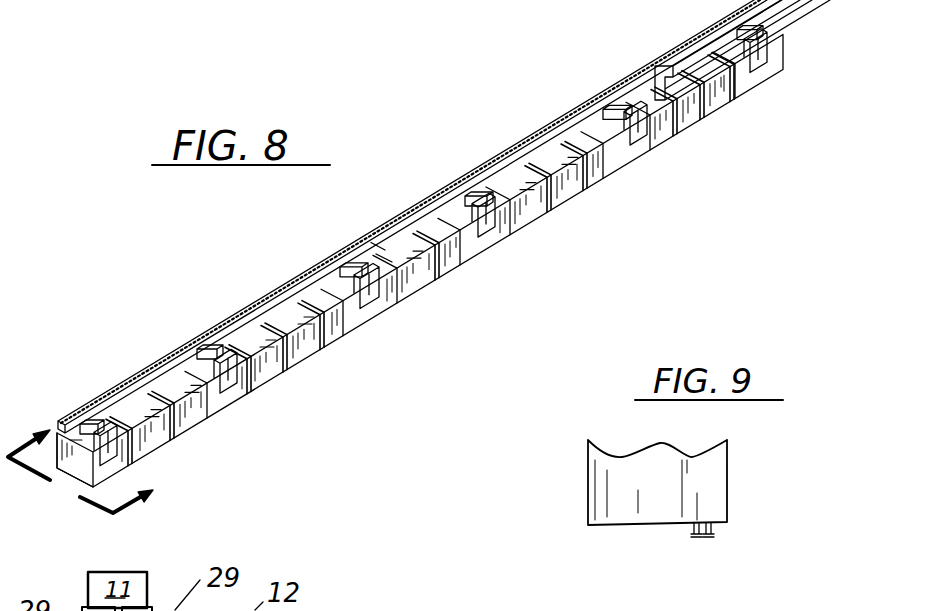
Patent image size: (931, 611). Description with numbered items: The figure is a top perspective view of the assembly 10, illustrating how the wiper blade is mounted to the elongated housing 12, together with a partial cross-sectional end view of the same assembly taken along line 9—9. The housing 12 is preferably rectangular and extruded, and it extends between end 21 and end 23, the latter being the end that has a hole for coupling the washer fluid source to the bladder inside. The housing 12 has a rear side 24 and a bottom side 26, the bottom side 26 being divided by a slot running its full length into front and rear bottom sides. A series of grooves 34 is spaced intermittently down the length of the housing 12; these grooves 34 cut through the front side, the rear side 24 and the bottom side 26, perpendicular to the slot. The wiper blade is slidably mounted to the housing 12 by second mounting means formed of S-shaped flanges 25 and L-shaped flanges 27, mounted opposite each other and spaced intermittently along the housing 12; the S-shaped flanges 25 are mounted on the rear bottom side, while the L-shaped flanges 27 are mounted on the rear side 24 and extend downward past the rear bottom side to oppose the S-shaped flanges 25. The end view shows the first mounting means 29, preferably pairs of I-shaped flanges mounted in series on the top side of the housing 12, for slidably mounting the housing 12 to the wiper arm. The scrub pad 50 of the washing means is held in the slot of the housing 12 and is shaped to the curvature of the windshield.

In FIG. 8, the line 9— 9 is at (90, 459).
In FIG. 8, the assembly 10 is at (503, 112).
In FIG. 8, the elongated housing 12 is at (567, 195).
In FIG. 9, the elongated housing 12 is at (727, 475).
In FIG. 8, the end 21 is at (77, 477).
In FIG. 9, the end 21 is at (659, 480).
In FIG. 8, the end 23 is at (785, 43).
In FIG. 8, the rear side 24 is at (424, 272).
In FIG. 8, the S-shaped flanges 25 is at (628, 105).
In FIG. 8, the bottom side 26 is at (388, 247).
In FIG. 8, the L-shaped flanges 27 is at (762, 72).
In FIG. 9, the first mounting means 29 is at (693, 534).
In FIG. 8, the grooves 34 is at (322, 330).
In FIG. 8, the scrub pad 50 is at (272, 296).